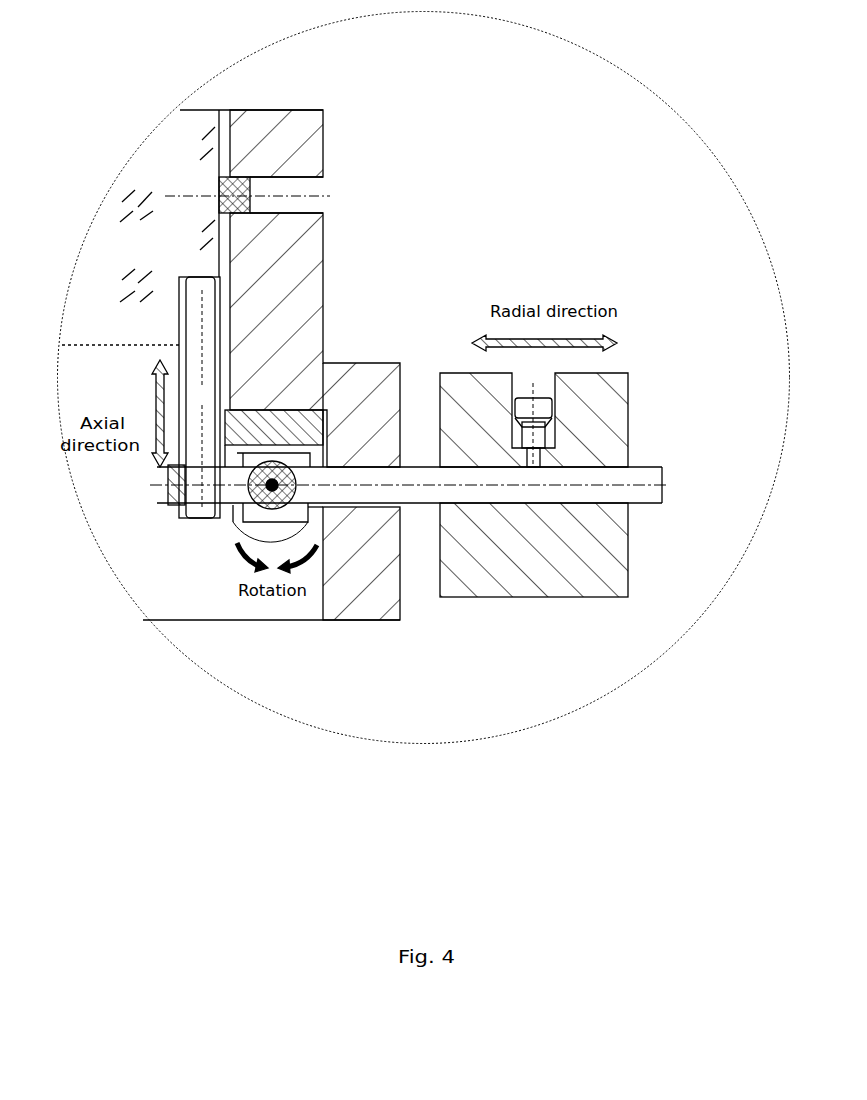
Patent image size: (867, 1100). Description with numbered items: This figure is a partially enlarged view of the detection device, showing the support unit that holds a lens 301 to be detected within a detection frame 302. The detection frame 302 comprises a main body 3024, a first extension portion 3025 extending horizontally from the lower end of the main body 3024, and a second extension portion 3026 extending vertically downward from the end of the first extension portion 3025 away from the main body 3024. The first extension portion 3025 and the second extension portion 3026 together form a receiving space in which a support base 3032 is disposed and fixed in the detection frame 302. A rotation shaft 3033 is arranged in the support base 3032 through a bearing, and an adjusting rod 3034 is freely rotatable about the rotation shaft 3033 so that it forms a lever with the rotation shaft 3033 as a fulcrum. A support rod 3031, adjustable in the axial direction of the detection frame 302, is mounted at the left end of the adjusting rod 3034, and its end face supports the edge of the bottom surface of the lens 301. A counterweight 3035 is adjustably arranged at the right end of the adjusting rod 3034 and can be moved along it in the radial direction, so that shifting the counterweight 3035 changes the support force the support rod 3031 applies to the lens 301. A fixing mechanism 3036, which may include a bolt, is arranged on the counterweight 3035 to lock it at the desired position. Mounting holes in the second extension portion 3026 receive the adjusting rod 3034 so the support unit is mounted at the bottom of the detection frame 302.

The lens to be detected 301 is at (173, 203).
The detection frame 302 is at (290, 320).
The main body 3024 is at (237, 199).
The first extension portion 3025 is at (314, 388).
The second extension portion 3026 is at (345, 510).
The support rod 3031 is at (203, 395).
The support base 3032 is at (250, 428).
The rotation shaft 3033 is at (272, 485).
The adjusting rod 3034 is at (362, 485).
The counterweight 3035 is at (480, 527).
The fixing mechanism 3036 is at (533, 430).